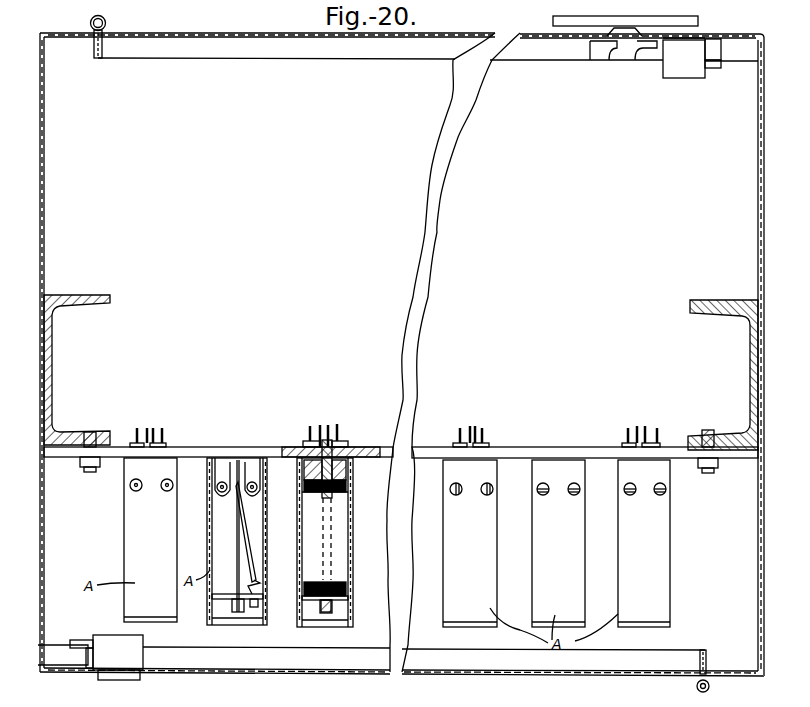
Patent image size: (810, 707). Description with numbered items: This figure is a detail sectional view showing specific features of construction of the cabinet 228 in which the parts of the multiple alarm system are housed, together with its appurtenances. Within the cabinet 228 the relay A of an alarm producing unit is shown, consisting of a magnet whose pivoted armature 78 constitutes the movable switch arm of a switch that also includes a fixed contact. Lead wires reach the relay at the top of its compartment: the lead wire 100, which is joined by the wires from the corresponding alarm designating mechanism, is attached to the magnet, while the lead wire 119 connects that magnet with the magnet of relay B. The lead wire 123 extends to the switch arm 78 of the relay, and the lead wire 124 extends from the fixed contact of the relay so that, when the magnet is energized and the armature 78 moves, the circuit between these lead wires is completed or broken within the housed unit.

The pivoted armature 78 is at (328, 612).
The lead wire 100 is at (340, 425).
The lead wire 119 is at (309, 437).
The lead wire 123 is at (330, 430).
The lead wire 124 is at (320, 428).
The cabinet 228 is at (58, 620).